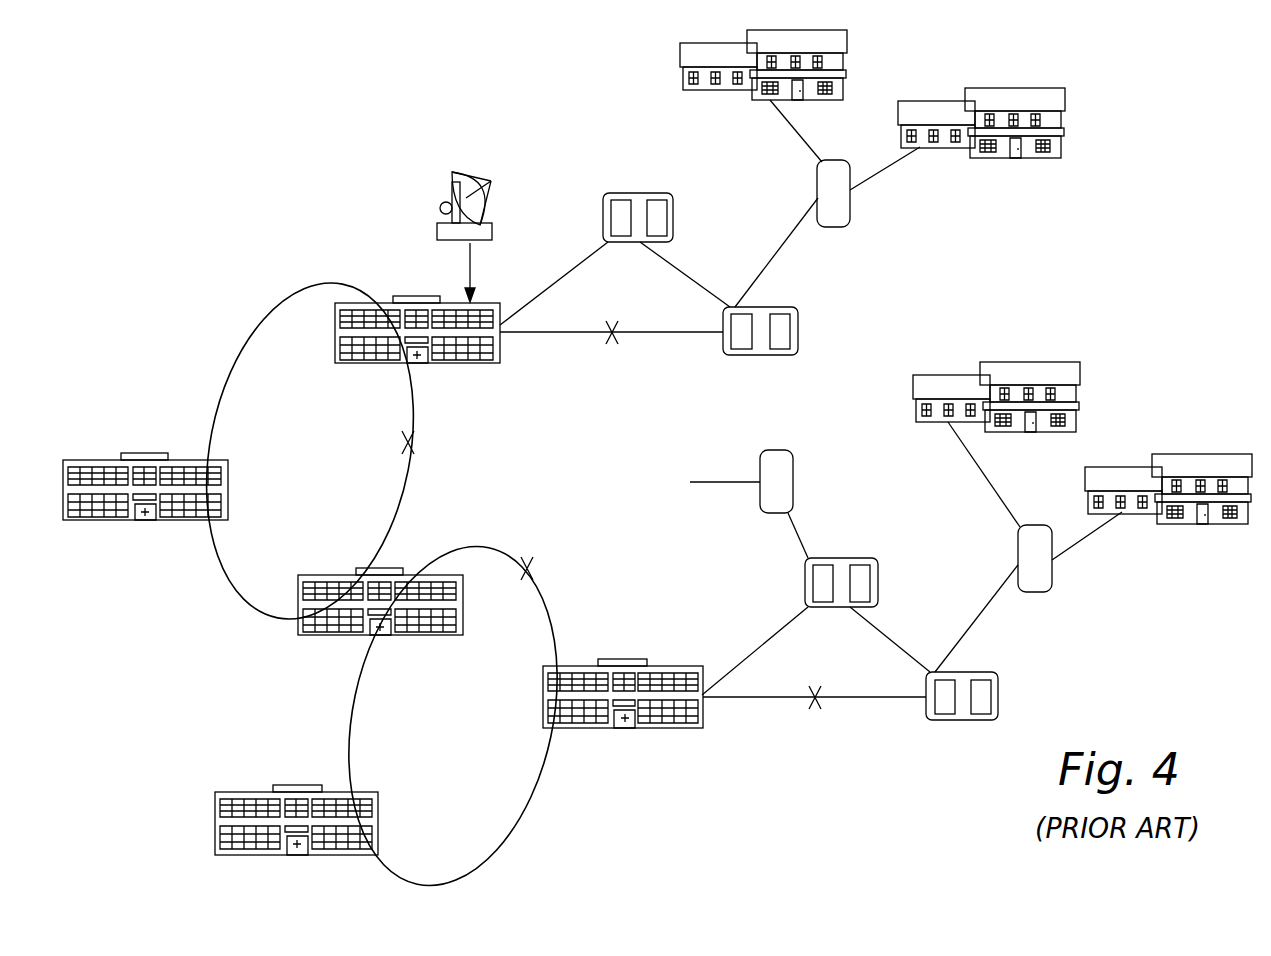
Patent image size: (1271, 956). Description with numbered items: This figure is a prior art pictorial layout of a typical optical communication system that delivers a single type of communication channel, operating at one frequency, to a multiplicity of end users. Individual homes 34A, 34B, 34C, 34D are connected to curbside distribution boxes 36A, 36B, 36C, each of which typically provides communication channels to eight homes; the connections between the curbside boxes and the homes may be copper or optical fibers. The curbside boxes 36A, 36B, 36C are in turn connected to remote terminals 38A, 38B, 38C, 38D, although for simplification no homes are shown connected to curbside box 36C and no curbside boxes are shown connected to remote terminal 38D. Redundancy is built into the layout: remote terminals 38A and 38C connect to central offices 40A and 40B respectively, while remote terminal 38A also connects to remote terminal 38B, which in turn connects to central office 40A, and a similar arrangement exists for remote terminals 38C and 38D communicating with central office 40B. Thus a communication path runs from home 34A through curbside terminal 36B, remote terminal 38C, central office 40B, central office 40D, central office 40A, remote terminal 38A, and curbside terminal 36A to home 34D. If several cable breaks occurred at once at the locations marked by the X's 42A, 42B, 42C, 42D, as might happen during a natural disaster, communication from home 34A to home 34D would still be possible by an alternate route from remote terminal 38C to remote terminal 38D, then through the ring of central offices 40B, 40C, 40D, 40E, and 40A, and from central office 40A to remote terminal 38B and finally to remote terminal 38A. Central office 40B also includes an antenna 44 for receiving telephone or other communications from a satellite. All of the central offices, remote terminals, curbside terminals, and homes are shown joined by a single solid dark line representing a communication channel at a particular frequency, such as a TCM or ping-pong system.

The home 34A is at (845, 92).
The home 34B is at (1062, 148).
The home 34C is at (1078, 422).
The home 34D is at (1178, 524).
The curbside distribution box 36A is at (1052, 585).
The curbside distribution box 36B is at (850, 218).
The curbside distribution box 36C is at (793, 485).
The remote terminal 38A is at (998, 700).
The remote terminal 38B is at (878, 585).
The remote terminal 38C is at (798, 332).
The remote terminal 38D is at (673, 222).
The central office 40A is at (618, 728).
The central office 40B is at (450, 363).
The central office 40C is at (108, 458).
The central office 40D is at (337, 637).
The central office 40E is at (250, 790).
The X (cable break) 42A is at (815, 703).
The X (cable break) 42B is at (612, 340).
The X (cable break) 42C is at (412, 445).
The X (cable break) 42D is at (530, 565).
The antenna 44 is at (447, 190).